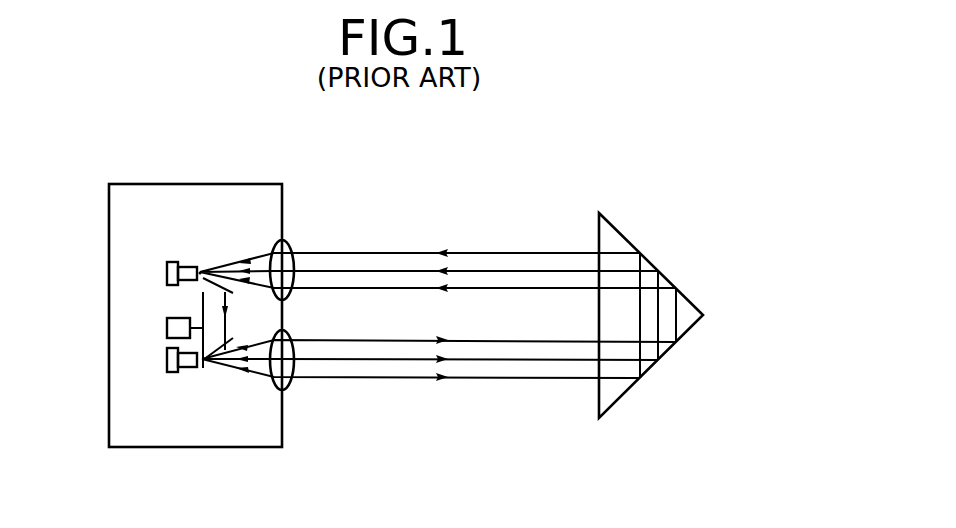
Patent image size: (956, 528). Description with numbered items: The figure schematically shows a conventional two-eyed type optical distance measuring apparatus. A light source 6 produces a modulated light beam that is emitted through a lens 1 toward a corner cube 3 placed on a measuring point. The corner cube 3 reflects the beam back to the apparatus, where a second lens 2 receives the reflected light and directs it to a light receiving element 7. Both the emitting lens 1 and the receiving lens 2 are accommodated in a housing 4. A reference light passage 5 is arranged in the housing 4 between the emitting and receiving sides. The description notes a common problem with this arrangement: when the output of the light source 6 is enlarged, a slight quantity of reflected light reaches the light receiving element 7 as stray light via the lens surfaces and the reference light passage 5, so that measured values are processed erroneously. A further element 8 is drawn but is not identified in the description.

The lens 1 is at (292, 241).
The lens 2 is at (291, 387).
The corner cube 3 is at (633, 390).
The housing 4 is at (232, 447).
The reference light passage 5 is at (200, 274).
The light source 6 is at (167, 273).
The light receiving element 7 is at (167, 361).
The reference light receiving element 8 is at (167, 330).